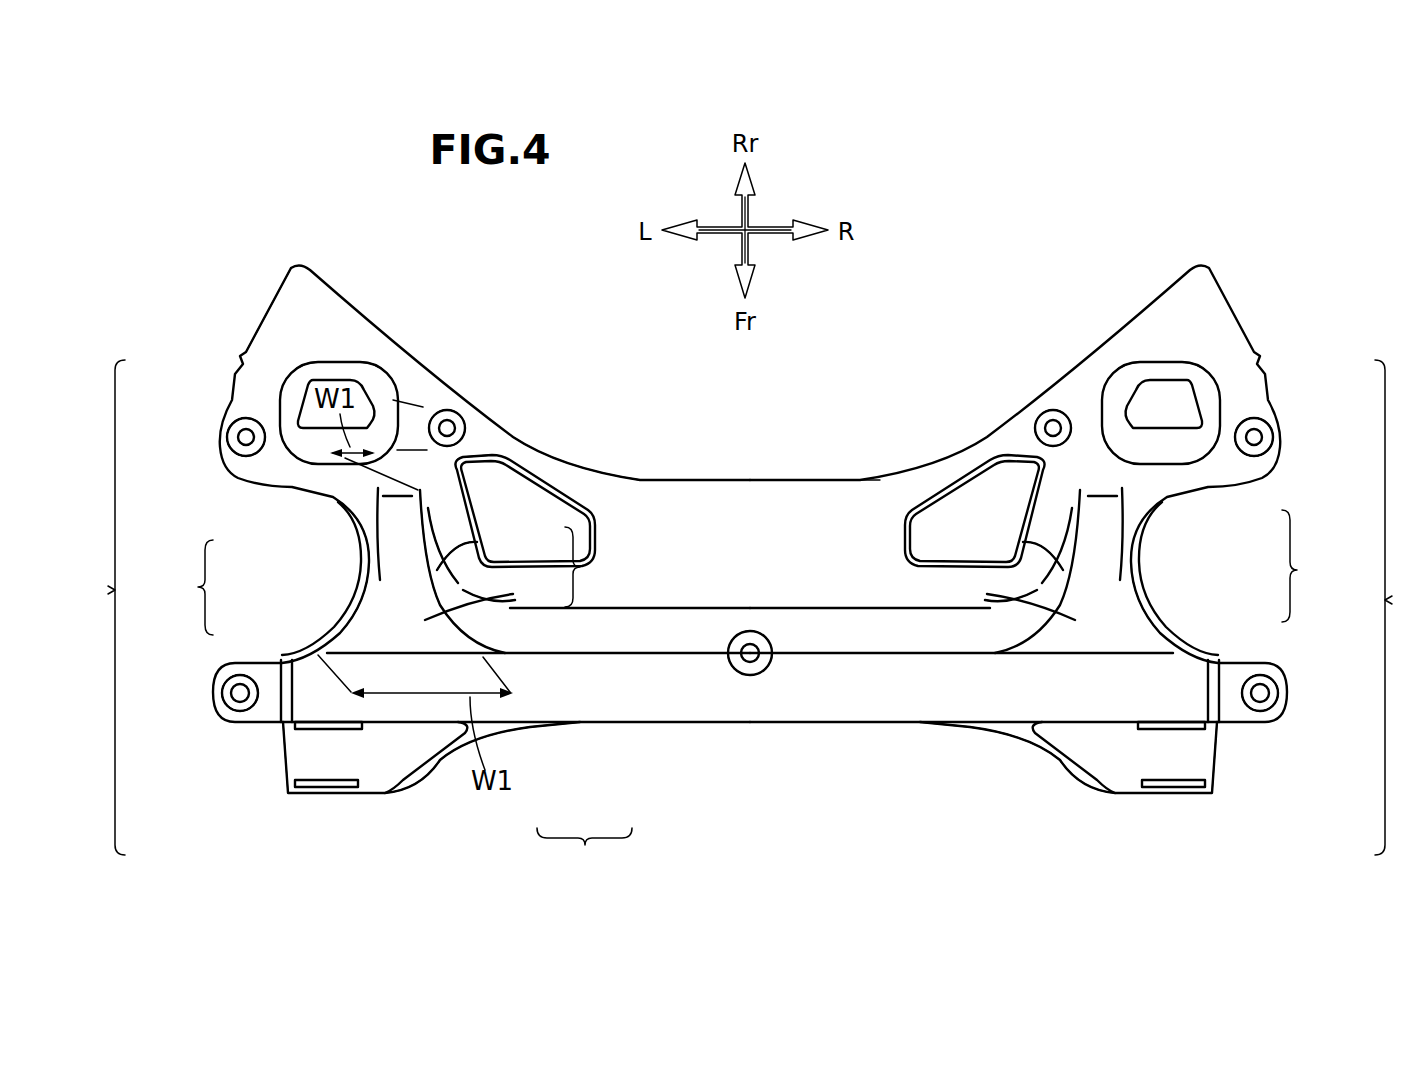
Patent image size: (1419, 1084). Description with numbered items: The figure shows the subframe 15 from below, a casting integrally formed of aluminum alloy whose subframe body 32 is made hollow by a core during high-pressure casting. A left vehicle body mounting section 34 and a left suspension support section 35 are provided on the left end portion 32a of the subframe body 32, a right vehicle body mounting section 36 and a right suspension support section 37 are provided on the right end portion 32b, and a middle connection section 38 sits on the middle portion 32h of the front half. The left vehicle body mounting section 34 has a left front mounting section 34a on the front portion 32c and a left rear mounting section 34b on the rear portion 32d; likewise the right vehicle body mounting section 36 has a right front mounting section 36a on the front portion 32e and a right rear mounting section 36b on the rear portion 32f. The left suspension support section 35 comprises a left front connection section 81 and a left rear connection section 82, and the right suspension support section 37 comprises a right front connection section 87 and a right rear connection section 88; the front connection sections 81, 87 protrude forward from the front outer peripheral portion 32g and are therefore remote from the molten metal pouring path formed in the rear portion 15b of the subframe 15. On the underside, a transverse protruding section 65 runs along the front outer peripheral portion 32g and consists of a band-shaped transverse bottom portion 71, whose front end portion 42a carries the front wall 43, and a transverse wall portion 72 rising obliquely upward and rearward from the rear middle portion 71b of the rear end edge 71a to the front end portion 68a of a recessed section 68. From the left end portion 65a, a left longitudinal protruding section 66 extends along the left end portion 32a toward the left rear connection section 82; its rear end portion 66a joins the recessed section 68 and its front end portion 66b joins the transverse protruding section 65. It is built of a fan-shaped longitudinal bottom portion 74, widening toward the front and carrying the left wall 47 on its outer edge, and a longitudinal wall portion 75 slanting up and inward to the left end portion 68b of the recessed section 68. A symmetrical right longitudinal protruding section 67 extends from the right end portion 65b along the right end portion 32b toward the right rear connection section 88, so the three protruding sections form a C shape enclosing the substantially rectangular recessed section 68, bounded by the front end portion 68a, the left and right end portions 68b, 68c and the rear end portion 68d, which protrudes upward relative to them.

The subframe 15 is at (260, 282).
The rear portion 15b is at (790, 478).
The subframe body 32 is at (678, 468).
The left end portion 32a is at (360, 562).
The right end portion 32b is at (1143, 562).
The front portion 32c is at (300, 735).
The rear portion 32d is at (397, 460).
The front portion 32e is at (1215, 715).
The rear portion 32f is at (1060, 473).
The front outer peripheral portion 32g is at (548, 455).
The middle portion 32h is at (748, 598).
The left vehicle body mounting section 34 is at (213, 564).
The left front mounting section 34a is at (238, 674).
The left rear mounting section 34b is at (247, 462).
The left suspension support section 35 is at (99, 607).
The right vehicle body mounting section 36 is at (1287, 564).
The right front mounting section 36a is at (1258, 674).
The right rear mounting section 36b is at (1252, 462).
The right suspension support section 37 is at (1397, 607).
The middle connection section 38 is at (765, 668).
The front end portion 42a is at (751, 715).
The front wall 43 is at (888, 725).
The left wall 47 is at (363, 537).
The transverse protruding section 65 is at (643, 801).
The left end portion 65a is at (387, 683).
The right end portion 65b is at (1100, 702).
The left longitudinal protruding section 66 is at (526, 567).
The rear end portion 66a is at (452, 498).
The front end portion 66b is at (435, 645).
The right longitudinal protruding section 67 is at (1052, 585).
The recessed section 68 is at (715, 553).
The front end portion 68a is at (860, 607).
The left end portion 68b is at (440, 528).
The right end portion 68c is at (1048, 560).
The rear end portion 68d is at (842, 485).
The transverse bottom portion 71 is at (622, 705).
The rear end edge 71a is at (628, 657).
The rear middle portion 71b is at (800, 652).
The transverse wall portion 72 is at (575, 632).
The longitudinal bottom portion 74 is at (515, 600).
The longitudinal wall portion 75 is at (477, 542).
The left front connection section 81 is at (302, 794).
The left rear connection section 82 is at (292, 400).
The right front connection section 87 is at (1183, 794).
The right rear connection section 88 is at (1210, 403).